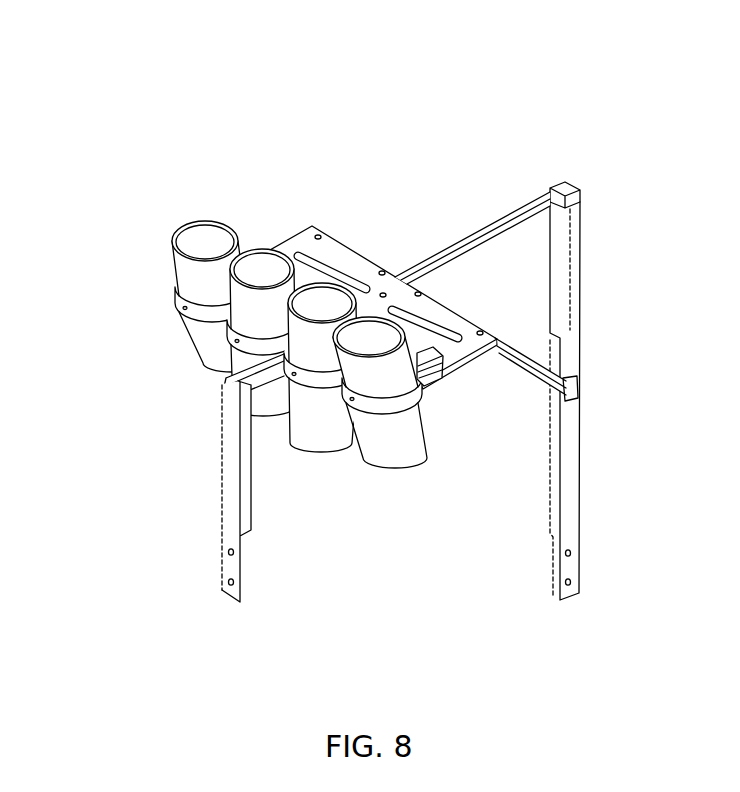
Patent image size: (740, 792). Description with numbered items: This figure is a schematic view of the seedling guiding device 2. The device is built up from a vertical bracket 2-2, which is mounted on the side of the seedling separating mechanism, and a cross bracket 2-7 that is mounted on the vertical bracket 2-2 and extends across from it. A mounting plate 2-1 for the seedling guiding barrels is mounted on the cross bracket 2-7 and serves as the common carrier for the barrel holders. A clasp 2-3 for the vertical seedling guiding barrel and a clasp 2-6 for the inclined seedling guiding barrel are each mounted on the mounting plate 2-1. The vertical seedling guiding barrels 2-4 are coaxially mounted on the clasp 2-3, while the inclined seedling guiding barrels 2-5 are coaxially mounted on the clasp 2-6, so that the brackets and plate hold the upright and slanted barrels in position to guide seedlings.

The guiding device 2 is at (362, 348).
The mounting plate for seedling guiding barrel 2-1 is at (467, 352).
The vertical bracket 2-2 is at (570, 458).
The clasp for vertical seedling guiding barrel 2-3 is at (313, 380).
The vertical seedling guiding barrels 2-4 is at (242, 310).
The inclined seedling guiding barrels 2-5 is at (203, 238).
The clasp for inclined seedling guiding barrel 2-6 is at (397, 398).
The cross bracket 2-7 is at (448, 270).